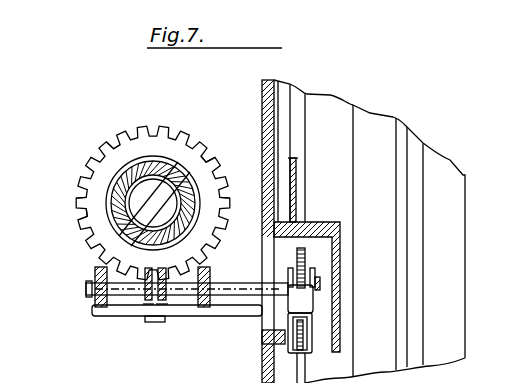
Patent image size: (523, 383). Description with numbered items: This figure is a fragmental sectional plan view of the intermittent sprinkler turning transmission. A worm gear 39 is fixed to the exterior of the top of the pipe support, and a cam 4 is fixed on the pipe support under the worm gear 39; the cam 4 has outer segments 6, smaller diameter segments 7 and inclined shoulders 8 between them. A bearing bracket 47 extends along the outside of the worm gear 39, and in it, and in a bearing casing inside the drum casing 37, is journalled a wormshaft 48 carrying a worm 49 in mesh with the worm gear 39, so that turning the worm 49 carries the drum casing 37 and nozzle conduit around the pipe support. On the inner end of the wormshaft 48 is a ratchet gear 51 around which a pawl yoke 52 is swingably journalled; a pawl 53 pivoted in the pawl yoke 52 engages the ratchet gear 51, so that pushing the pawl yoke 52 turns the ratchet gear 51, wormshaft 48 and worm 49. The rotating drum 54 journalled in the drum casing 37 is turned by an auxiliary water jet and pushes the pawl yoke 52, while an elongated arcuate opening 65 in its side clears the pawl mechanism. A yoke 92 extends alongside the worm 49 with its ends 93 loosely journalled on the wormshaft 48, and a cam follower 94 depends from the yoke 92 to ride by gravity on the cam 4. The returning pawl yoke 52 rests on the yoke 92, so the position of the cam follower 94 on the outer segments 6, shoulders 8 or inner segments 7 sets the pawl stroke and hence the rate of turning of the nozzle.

The cam 4 is at (68, 235).
The outer segments 6 is at (76, 176).
The smaller diameter segments 7 is at (137, 130).
The shoulders 8 is at (105, 150).
The drum casing 37 is at (262, 98).
The worm gear 39 is at (84, 212).
The bearing bracket 47 is at (95, 278).
The wormshaft 48 is at (238, 282).
The worm 49 is at (163, 299).
The ratchet gear 51 is at (297, 253).
The pawl yoke 52 is at (307, 299).
The pawl 53 is at (307, 325).
The rotating drum 54 is at (305, 125).
The elongated arcuate opening 65 is at (293, 221).
The yoke 92 is at (210, 304).
The ends 93 is at (320, 273).
The cam follower 94 is at (152, 322).